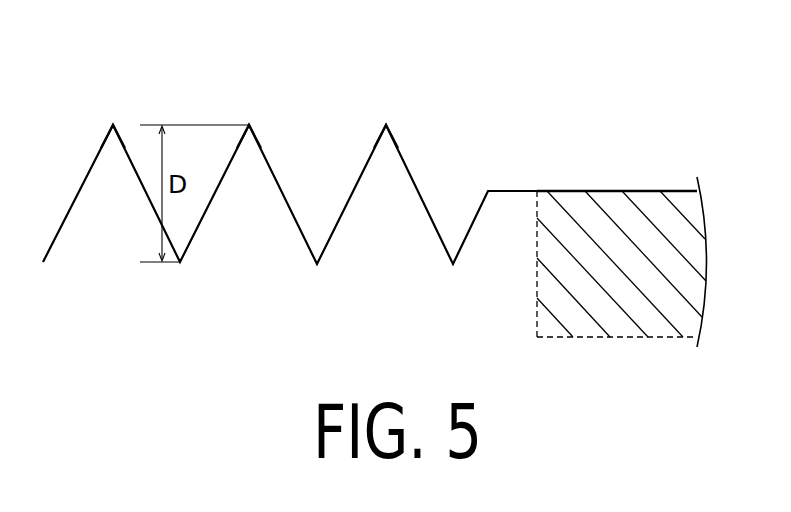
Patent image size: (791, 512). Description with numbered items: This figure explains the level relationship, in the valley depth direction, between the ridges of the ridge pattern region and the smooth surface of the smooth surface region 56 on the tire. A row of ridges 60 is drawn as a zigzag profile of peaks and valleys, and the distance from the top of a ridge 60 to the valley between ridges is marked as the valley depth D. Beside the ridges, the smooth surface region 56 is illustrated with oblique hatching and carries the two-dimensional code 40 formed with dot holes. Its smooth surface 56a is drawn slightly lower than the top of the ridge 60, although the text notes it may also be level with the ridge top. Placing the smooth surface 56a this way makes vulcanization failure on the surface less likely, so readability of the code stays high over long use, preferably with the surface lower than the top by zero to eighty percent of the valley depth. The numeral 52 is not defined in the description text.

The two-dimensional code 40 is at (683, 237).
The thread portion 52 is at (336, 132).
The smooth surface region 56 is at (615, 185).
The smooth surface 56a is at (572, 191).
The ridge 60 is at (110, 158).